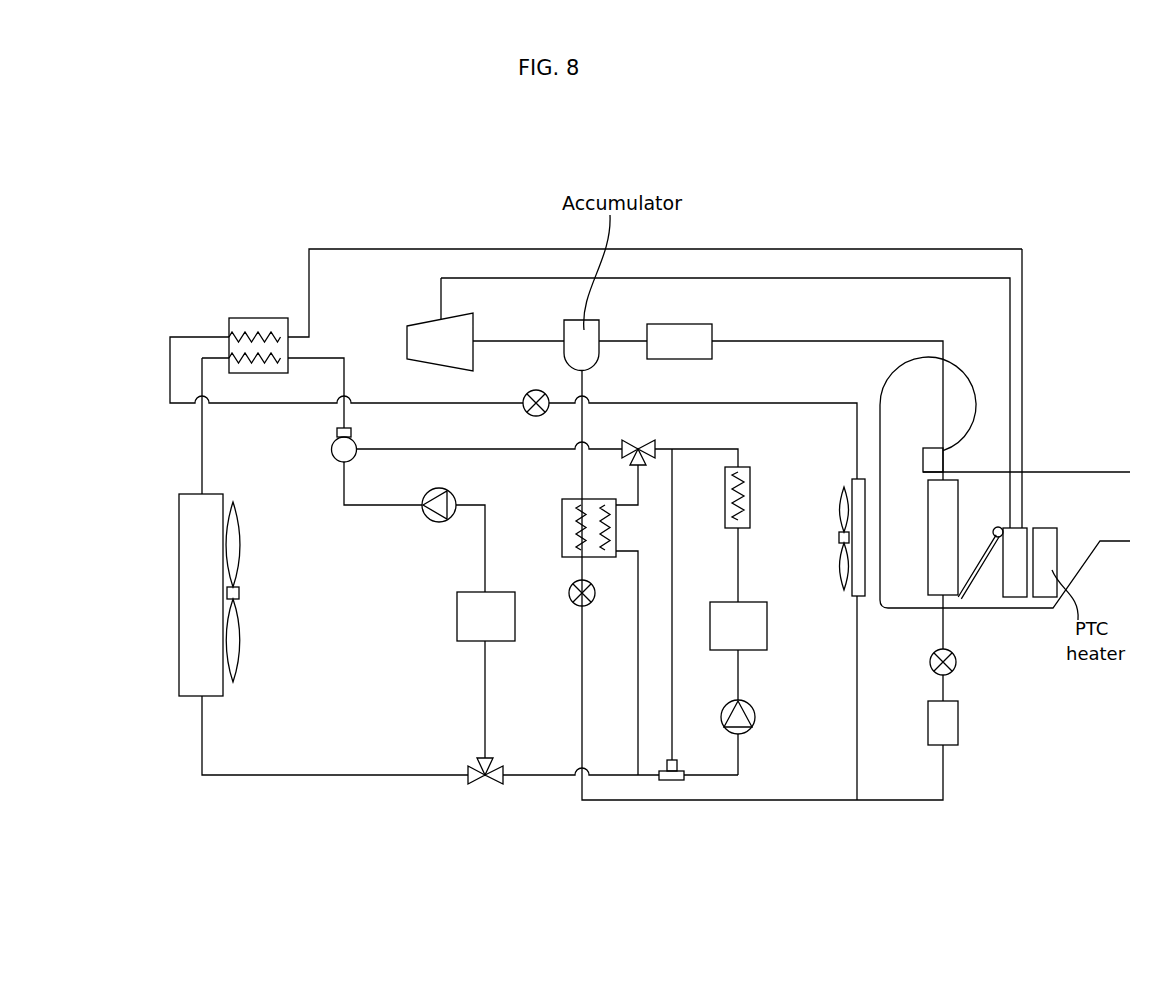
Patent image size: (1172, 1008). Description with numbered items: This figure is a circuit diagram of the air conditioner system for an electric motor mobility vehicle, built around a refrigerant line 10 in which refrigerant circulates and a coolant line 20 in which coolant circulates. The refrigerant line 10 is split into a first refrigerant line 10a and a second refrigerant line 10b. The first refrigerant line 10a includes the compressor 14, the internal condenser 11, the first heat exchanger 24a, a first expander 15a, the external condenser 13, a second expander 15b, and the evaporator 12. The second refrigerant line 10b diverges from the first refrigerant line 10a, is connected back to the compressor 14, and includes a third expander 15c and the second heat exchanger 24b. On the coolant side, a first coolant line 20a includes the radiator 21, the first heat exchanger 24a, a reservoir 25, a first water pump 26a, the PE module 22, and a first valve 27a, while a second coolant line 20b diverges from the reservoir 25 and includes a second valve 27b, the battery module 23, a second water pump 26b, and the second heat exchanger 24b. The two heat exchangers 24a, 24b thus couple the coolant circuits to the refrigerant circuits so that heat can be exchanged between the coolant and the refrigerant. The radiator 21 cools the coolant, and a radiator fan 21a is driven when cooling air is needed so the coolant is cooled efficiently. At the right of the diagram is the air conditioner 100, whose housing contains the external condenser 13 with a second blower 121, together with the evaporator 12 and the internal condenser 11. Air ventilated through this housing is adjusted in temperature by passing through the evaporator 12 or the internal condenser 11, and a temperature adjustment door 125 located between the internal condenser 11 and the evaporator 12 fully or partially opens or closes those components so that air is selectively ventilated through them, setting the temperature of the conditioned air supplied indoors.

The refrigerant line 10 is at (835, 249).
The first refrigerant line 10a is at (725, 249).
The second refrigerant line 10b is at (790, 800).
The internal condenser 11 is at (1020, 597).
The evaporator 12 is at (957, 485).
The external condenser 13 is at (856, 478).
The compressor 14 is at (420, 330).
The first expander 15a is at (536, 390).
The second expander 15b is at (575, 606).
The third expander 15c is at (956, 672).
The coolant line 20 is at (411, 782).
The first coolant line 20a is at (306, 778).
The second coolant line 20b is at (708, 778).
The radiator 21 is at (225, 690).
The radiator fan 21a is at (238, 632).
The PE module 22 is at (457, 620).
The battery module 23 is at (767, 625).
The first heat exchanger 24a is at (255, 318).
The second heat exchanger 24b is at (562, 505).
The reservoir 25 is at (331, 449).
The first water pump 26a is at (425, 518).
The second water pump 26b is at (755, 718).
The first valve 27a is at (486, 783).
The second valve 27b is at (657, 443).
The air conditioner 100 is at (1088, 472).
The second blower 121 is at (840, 537).
The temperature adjustment door 125 is at (981, 575).